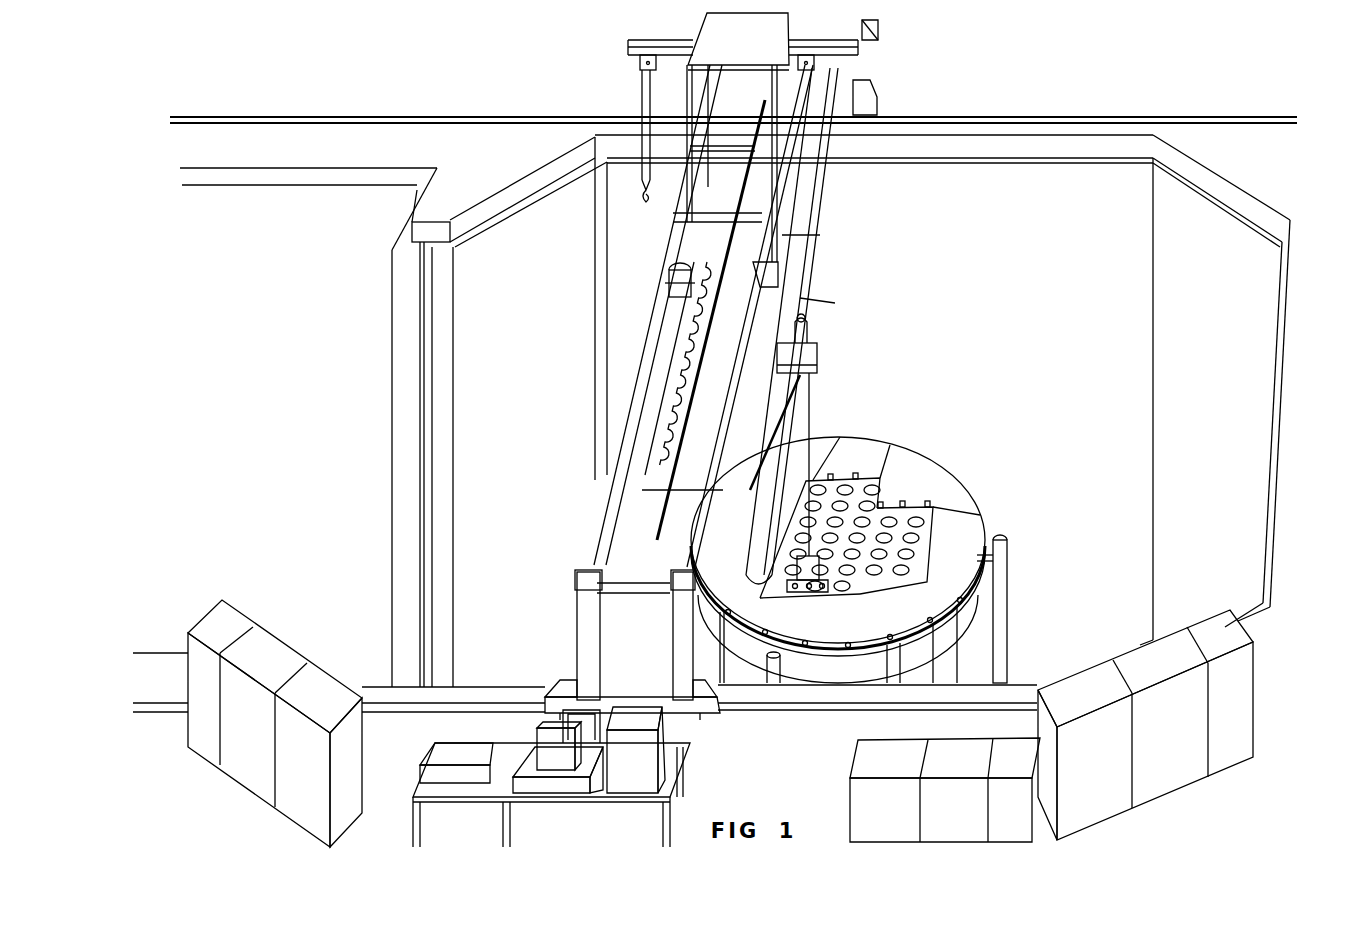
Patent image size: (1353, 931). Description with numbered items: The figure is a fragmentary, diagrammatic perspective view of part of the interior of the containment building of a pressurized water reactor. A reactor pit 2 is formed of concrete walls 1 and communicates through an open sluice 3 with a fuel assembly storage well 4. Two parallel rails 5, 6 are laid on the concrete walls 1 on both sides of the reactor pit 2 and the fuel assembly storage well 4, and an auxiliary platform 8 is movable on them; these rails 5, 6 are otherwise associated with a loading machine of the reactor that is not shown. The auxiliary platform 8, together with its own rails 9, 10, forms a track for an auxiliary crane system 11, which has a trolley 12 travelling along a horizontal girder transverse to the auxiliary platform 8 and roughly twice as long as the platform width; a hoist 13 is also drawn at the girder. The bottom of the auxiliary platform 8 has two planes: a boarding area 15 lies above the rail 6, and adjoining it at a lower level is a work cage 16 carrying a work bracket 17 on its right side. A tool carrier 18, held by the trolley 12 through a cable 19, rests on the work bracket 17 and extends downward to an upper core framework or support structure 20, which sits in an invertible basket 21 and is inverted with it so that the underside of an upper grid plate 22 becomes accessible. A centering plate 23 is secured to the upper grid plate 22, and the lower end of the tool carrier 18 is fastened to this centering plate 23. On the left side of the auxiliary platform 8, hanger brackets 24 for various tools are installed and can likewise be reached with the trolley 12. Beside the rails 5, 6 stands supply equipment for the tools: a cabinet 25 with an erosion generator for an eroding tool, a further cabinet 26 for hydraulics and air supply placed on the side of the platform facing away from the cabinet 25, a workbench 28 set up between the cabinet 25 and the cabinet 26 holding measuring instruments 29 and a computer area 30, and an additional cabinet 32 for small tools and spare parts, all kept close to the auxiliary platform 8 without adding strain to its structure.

The concrete walls 1 is at (1288, 475).
The reactor pit 2 is at (1247, 324).
The open sluice 3 is at (422, 435).
The fuel assembly storage well 4 is at (273, 417).
The rail 5 is at (266, 117).
The rail 6 is at (165, 712).
The auxiliary platform 8 is at (585, 625).
The rail 9 is at (680, 308).
The rail 10 is at (745, 358).
The auxiliary crane system 11 is at (706, 20).
The trolley 12 is at (642, 62).
The hoist 13 is at (852, 47).
The boarding area 15 is at (608, 552).
The work cage 16 is at (825, 278).
The work bracket 17 is at (820, 367).
The tool carrier 18 is at (814, 415).
The cable 19 is at (800, 89).
The upper core framework or support structure 20 is at (895, 527).
The invertible basket 21 is at (955, 612).
The upper grid plate 22 is at (880, 500).
The centering plate 23 is at (820, 598).
The hanger brackets 24 is at (640, 425).
The cabinet 25 is at (238, 774).
The further cabinet 26 is at (1226, 755).
The workbench 28 is at (680, 750).
The measuring instruments 29 is at (629, 786).
The computer area 30 is at (561, 770).
The additional cabinet 32 is at (855, 766).